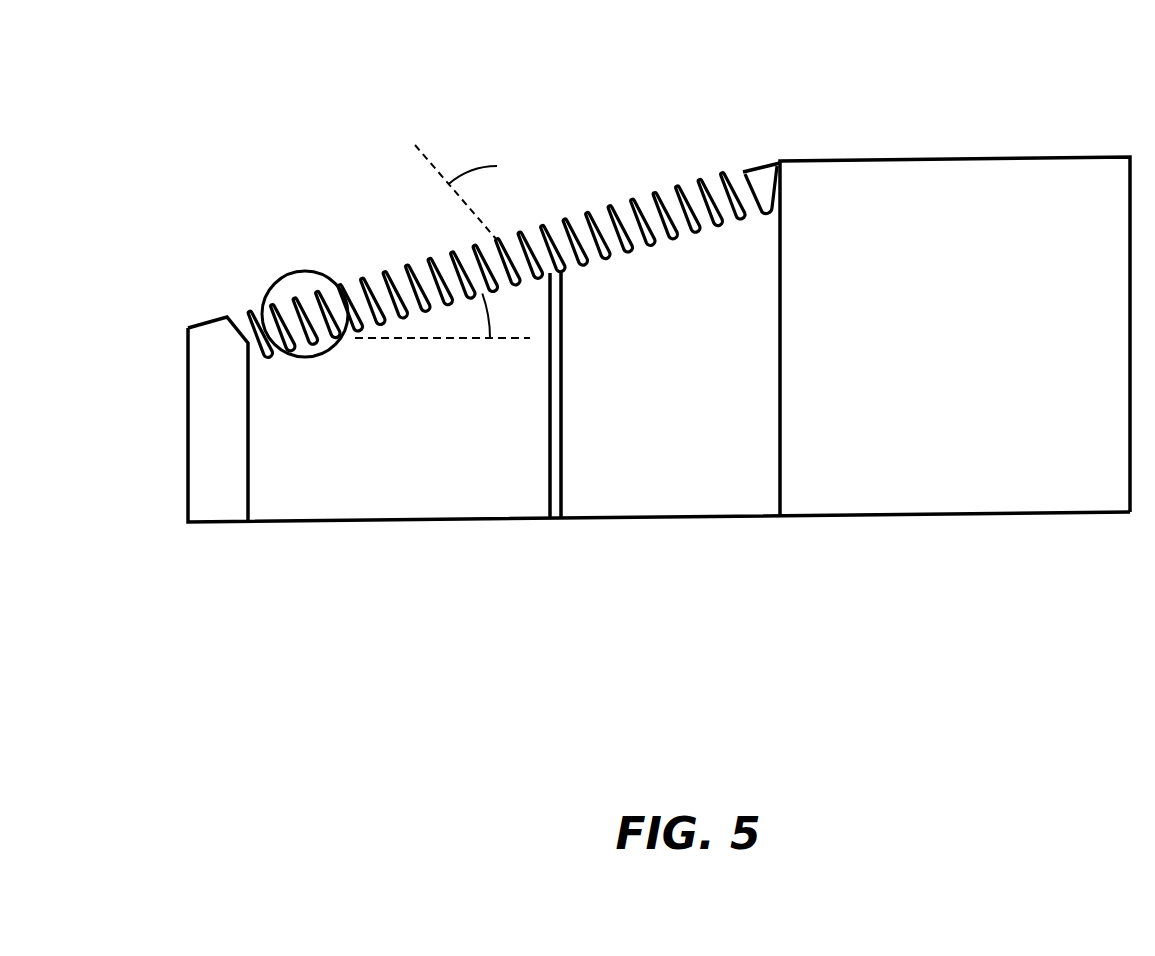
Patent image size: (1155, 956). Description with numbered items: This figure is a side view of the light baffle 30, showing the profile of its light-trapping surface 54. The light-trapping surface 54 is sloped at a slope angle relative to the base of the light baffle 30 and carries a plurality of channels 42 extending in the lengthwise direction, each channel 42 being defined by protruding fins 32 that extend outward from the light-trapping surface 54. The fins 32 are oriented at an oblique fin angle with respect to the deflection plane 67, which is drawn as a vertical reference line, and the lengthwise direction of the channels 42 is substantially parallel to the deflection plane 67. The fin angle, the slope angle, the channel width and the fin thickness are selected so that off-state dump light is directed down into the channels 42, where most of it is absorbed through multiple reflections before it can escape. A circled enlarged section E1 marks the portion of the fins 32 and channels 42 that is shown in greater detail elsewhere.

The light baffle 30 is at (1004, 96).
The light-trapping surface 54 is at (485, 194).
The deflection plane 67 is at (496, 240).
The fins 32 is at (700, 175).
The channels 42 is at (679, 222).
The enlarged section E1 is at (305, 296).